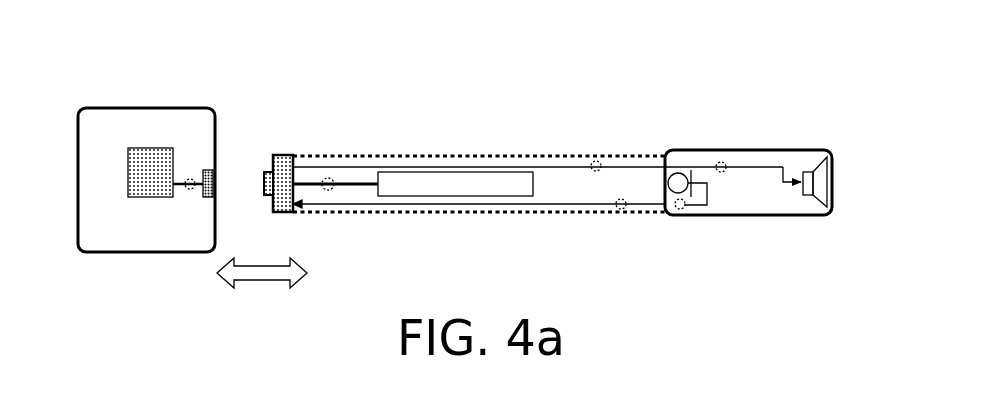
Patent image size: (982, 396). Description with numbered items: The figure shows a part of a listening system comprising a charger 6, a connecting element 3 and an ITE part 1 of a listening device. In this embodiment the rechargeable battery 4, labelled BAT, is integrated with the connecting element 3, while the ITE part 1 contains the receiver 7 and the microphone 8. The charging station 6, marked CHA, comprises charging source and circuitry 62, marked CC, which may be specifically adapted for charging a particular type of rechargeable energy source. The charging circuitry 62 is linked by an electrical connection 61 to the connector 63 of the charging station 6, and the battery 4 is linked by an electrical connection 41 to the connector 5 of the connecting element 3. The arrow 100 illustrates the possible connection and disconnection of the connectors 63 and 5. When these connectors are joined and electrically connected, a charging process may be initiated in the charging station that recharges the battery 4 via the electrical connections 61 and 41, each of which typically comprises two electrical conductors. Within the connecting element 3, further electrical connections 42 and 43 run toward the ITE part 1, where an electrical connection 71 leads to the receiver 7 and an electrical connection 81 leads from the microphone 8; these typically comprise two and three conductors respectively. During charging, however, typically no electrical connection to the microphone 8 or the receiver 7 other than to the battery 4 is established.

The ITE part 1 is at (696, 218).
The connecting element 3 is at (386, 153).
The rechargeable battery 4 is at (398, 190).
The connector 5 is at (278, 155).
The charger 6 is at (182, 100).
The receiver 7 is at (817, 178).
The microphone 8 is at (682, 178).
The electrical connection 41 is at (330, 178).
The electrical connection 42 is at (600, 161).
The electrical connection 43 is at (616, 208).
The electrical connection 61 is at (192, 177).
The charging source and circuitry 62 is at (150, 150).
The connector 63 is at (212, 182).
The electrical connection 71 is at (722, 163).
The electrical connection 81 is at (677, 208).
The arrow 100 is at (270, 277).